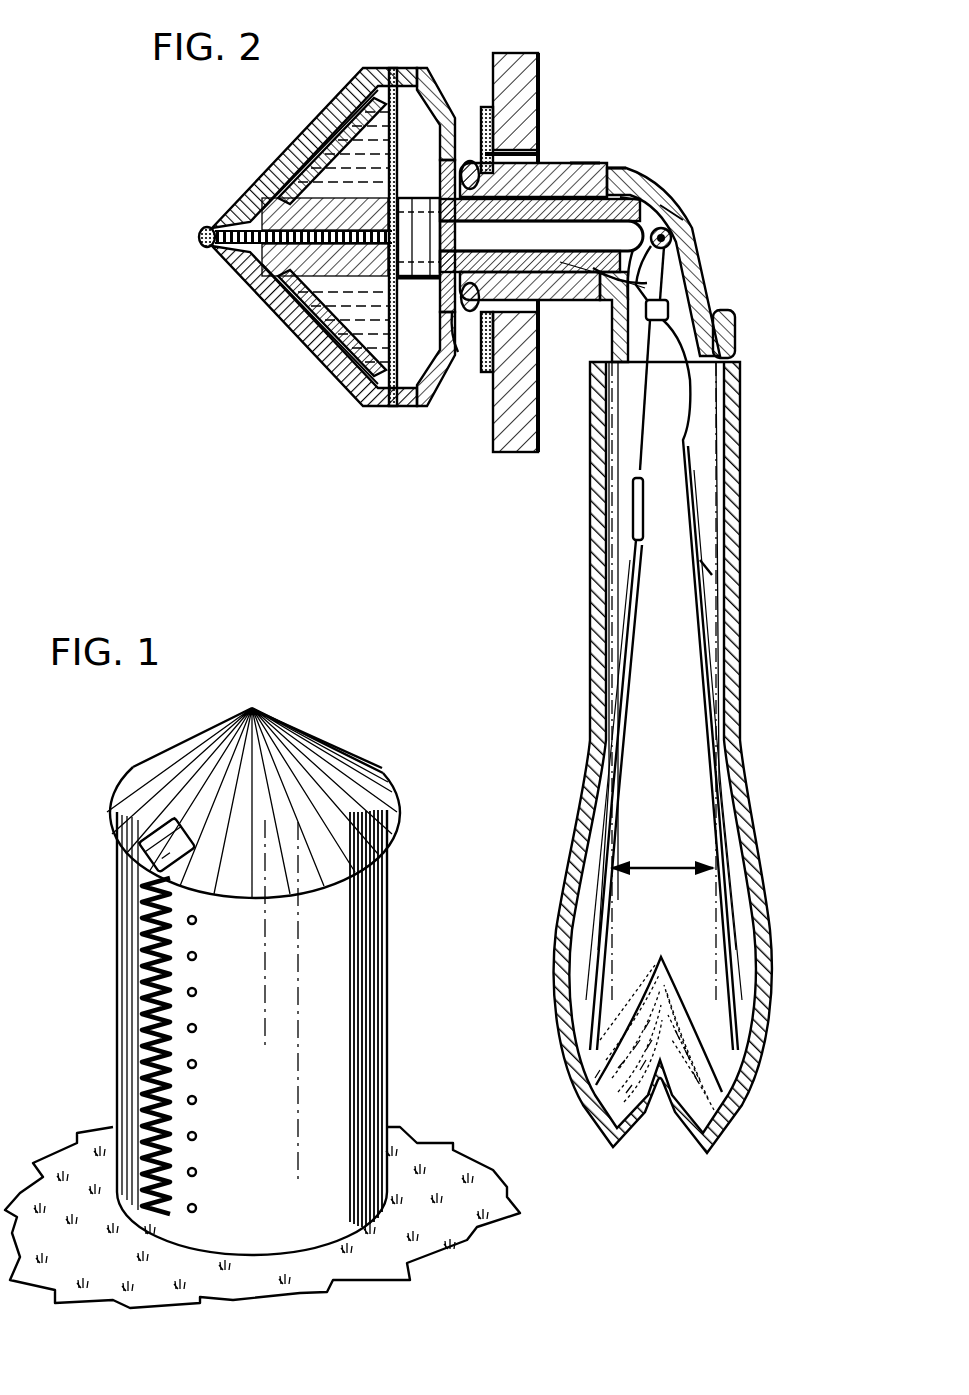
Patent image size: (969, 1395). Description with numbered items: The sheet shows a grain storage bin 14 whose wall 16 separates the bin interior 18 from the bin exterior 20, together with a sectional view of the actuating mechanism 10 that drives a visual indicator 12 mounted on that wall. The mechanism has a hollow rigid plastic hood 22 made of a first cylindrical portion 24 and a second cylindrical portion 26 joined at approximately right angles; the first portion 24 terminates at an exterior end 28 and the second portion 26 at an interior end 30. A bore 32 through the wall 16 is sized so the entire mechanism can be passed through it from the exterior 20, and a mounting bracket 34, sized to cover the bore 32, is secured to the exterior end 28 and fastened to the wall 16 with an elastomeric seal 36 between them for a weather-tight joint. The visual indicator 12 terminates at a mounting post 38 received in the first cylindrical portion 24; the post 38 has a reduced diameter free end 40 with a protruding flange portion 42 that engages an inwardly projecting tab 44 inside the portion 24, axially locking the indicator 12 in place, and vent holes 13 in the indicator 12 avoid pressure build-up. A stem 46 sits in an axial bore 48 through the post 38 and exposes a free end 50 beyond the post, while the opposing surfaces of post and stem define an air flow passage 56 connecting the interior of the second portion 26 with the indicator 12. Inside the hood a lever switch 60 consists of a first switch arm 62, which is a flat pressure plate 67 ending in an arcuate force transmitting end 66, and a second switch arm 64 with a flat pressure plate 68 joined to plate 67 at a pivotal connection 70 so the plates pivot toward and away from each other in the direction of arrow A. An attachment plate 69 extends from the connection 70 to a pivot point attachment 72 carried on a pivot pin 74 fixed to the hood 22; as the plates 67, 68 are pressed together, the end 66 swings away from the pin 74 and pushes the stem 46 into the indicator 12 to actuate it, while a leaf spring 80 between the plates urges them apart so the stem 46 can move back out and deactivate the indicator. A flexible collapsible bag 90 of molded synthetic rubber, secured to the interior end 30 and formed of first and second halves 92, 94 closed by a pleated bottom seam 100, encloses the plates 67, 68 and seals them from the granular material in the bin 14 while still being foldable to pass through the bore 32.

In FIG. 2, the actuating mechanism 10 is at (802, 195).
In FIG. 2, the visual indicator 12 is at (248, 180).
In FIG. 1, the visual indicator 12 is at (197, 955).
In FIG. 2, the vent holes 13 is at (335, 110).
In FIG. 1, the grain storage bin 14 is at (320, 727).
In FIG. 2, the wall 16 is at (542, 70).
In FIG. 1, the wall 16 is at (374, 985).
In FIG. 2, the bin interior 18 is at (667, 48).
In FIG. 2, the bin exterior 20 is at (374, 27).
In FIG. 2, the hollow hood 22 is at (645, 165).
In FIG. 2, the first cylindrical portion 24 is at (544, 170).
In FIG. 2, the second cylindrical portion 26 is at (710, 267).
In FIG. 2, the exterior end 28 is at (460, 350).
In FIG. 2, the interior end 30 is at (740, 400).
In FIG. 2, the bore 32 is at (548, 305).
In FIG. 2, the mounting bracket 34 is at (480, 142).
In FIG. 2, the elastomeric seal 36 is at (488, 128).
In FIG. 2, the mounting post 38 is at (571, 172).
In FIG. 2, the free end 40 is at (690, 297).
In FIG. 2, the flange portion 42 is at (632, 172).
In FIG. 2, the tab 44 is at (600, 197).
In FIG. 2, the stem 46 is at (419, 268).
In FIG. 2, the axial bore 48 is at (556, 300).
In FIG. 2, the free end 50 is at (627, 200).
In FIG. 2, the air flow passage 56 is at (440, 200).
In FIG. 2, the lever switch 60 is at (712, 551).
In FIG. 2, the first switch arm 62 is at (592, 910).
In FIG. 2, the second switch arm 64 is at (738, 900).
In FIG. 2, the force transmitting end 66 is at (655, 217).
In FIG. 2, the pressure plate 67 is at (620, 684).
In FIG. 2, the pressure plate 68 is at (707, 674).
In FIG. 2, the attachment plate 69 is at (710, 277).
In FIG. 2, the pivotal connection 70 is at (669, 312).
In FIG. 2, the pivot point attachment 72 is at (677, 224).
In FIG. 2, the pivot pin 74 is at (700, 248).
In FIG. 2, the leaf spring 80 is at (655, 445).
In FIG. 2, the flexible collapsible bag 90 is at (756, 593).
In FIG. 2, the first bag half 92 is at (584, 774).
In FIG. 2, the second bag half 94 is at (744, 764).
In FIG. 2, the pleated bottom seam 100 is at (637, 1133).
In FIG. 2, the arrow A is at (664, 862).